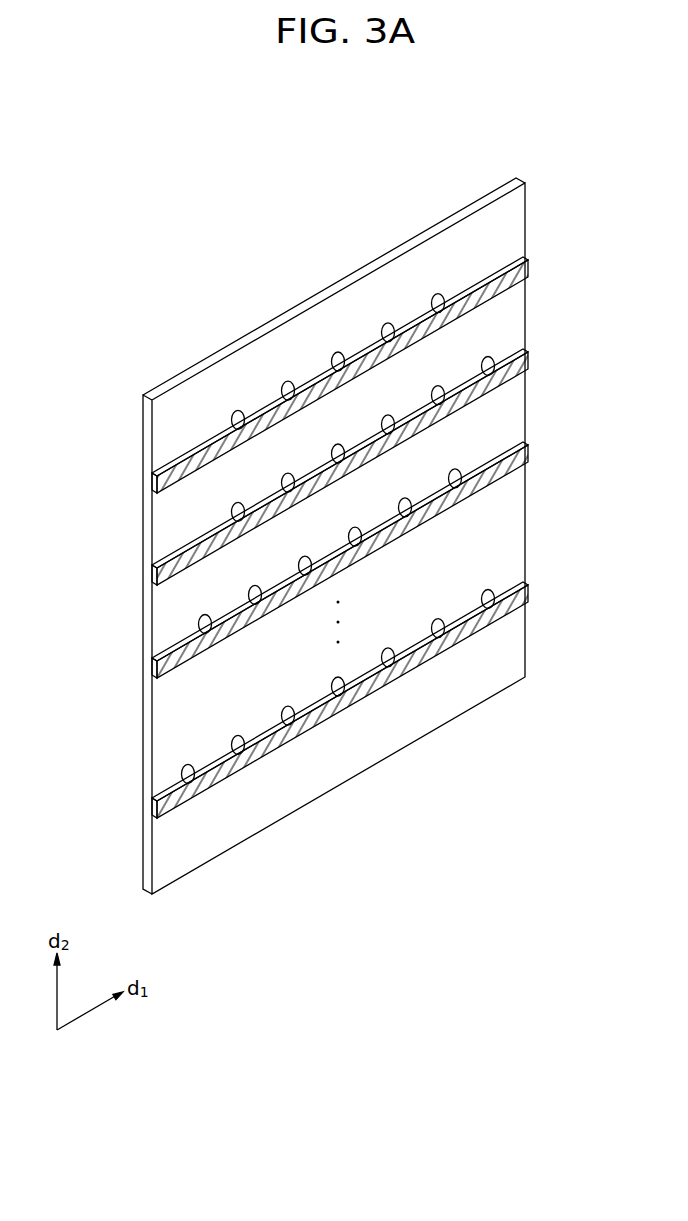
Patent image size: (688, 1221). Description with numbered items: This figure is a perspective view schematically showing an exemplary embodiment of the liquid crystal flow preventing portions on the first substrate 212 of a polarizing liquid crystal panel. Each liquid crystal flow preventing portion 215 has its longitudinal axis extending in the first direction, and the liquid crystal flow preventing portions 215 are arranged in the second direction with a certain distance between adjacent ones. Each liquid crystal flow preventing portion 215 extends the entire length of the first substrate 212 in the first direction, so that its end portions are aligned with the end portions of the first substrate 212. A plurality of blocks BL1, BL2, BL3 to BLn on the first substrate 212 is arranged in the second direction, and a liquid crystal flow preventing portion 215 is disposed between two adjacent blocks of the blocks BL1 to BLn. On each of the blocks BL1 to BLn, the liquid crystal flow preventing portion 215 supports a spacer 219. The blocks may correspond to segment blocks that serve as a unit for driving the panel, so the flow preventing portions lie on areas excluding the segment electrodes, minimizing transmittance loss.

The first substrate 212 is at (328, 315).
The liquid crystal flow preventing portion 215 is at (527, 363).
The spacer 219 is at (495, 363).
The block BL1 is at (157, 446).
The block BL2 is at (326, 460).
The block BL3 is at (157, 620).
The block BLn is at (158, 852).